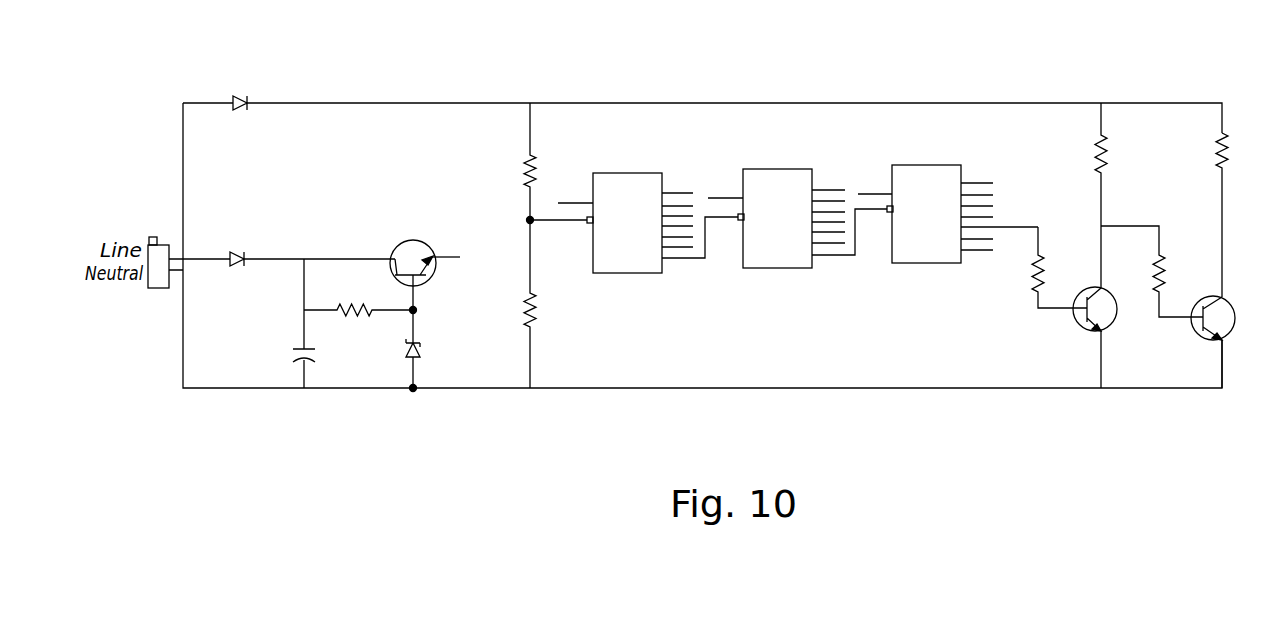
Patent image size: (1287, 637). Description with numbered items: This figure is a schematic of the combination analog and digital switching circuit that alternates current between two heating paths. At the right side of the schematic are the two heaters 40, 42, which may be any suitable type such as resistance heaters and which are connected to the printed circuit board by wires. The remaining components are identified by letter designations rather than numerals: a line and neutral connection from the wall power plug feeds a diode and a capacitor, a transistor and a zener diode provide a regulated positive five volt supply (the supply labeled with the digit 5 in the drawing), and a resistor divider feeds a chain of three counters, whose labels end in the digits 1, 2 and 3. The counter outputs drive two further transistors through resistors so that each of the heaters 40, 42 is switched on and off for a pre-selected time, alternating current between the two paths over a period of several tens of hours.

The heater 40 is at (1090, 148).
The heater 42 is at (1213, 147).
The +5V supply 5 is at (457, 246).
The integrated circuit U1 1 is at (634, 210).
The integrated circuit U2 2 is at (797, 205).
The integrated circuit U3 3 is at (948, 201).